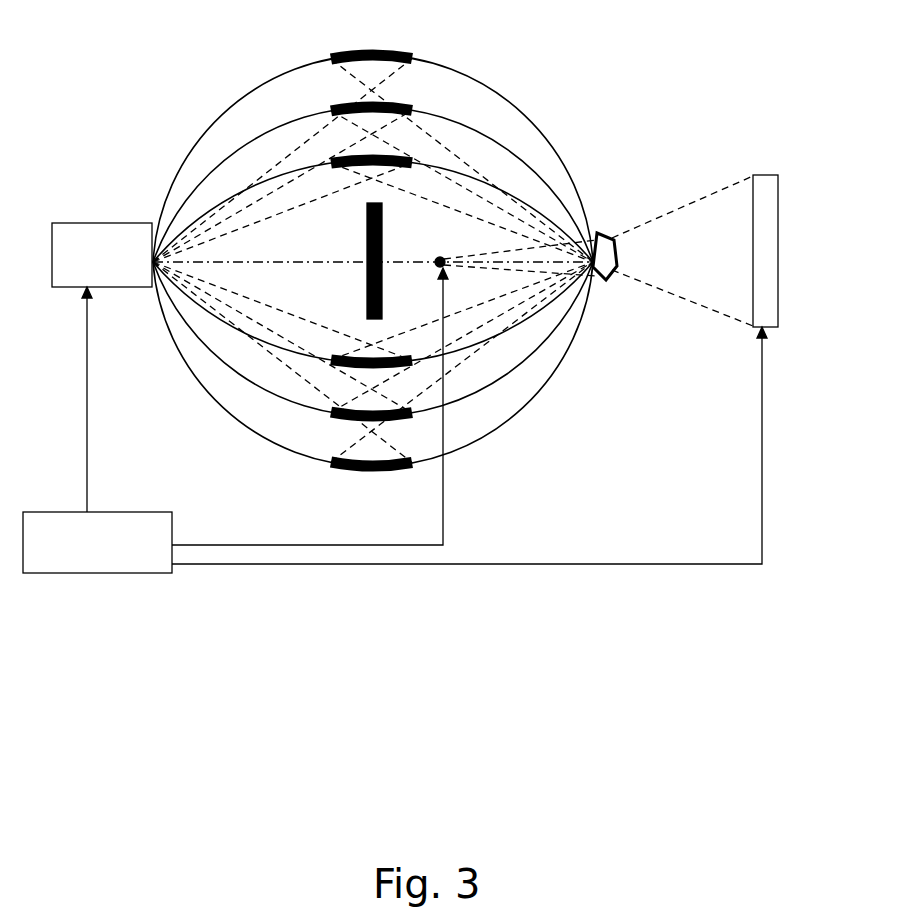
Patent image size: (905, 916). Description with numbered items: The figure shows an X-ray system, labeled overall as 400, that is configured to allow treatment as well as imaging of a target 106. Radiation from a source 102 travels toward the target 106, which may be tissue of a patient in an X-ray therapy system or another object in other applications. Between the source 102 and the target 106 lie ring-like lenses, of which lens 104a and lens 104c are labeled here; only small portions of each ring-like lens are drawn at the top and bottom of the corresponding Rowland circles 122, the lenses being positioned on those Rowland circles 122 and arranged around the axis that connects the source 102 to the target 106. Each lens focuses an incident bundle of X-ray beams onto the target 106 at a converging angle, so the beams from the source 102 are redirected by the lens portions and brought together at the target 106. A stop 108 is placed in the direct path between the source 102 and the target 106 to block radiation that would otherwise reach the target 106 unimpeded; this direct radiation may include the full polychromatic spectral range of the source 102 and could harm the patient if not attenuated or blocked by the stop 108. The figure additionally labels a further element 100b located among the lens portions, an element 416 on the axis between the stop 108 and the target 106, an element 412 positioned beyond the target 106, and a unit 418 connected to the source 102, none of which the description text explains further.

The optical system 400 is at (622, 80).
The source 102 is at (102, 255).
The Rowland circles 122 is at (198, 209).
The ring-like lens 104a is at (322, 156).
The mirror 100b is at (333, 94).
The ring-like lens 104c is at (394, 42).
The stop 108 is at (358, 282).
The pinhole aperture 416 is at (431, 252).
The target 106 is at (614, 232).
The screen 412 is at (784, 258).
The switching unit 418 is at (395, 420).